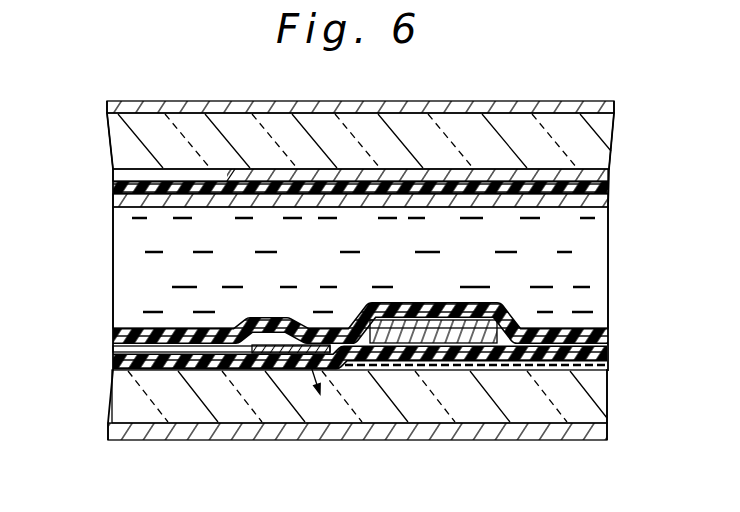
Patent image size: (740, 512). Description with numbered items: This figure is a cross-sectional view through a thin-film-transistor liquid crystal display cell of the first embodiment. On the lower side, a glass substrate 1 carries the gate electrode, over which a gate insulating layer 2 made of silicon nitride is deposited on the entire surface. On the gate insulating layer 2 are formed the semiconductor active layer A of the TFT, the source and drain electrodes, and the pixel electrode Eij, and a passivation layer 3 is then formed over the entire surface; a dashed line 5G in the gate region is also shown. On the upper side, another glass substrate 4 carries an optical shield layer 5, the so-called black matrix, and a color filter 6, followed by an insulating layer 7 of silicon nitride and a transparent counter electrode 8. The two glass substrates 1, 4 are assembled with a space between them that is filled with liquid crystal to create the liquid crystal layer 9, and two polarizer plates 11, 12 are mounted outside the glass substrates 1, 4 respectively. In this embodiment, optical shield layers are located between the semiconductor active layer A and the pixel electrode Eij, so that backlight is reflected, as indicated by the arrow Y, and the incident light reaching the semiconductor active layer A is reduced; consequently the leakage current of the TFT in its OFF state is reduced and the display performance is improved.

The polarizer plate 12 is at (107, 104).
The glass substrate 4 is at (112, 141).
The color filter 6 is at (113, 176).
The optical shield layer 5 is at (609, 175).
The insulating layer 7 is at (113, 189).
The transparent counter electrode 8 is at (113, 205).
The liquid crystal layer 9 is at (114, 278).
The passivation layer 3 is at (114, 338).
The semiconductor active layer A is at (432, 335).
The pixel electrode Eij is at (192, 350).
The arrow Y is at (303, 356).
The gate insulating layer 2 is at (114, 362).
The gate line 5G is at (523, 368).
The glass substrate 1 is at (112, 398).
The polarizer plate 11 is at (108, 428).